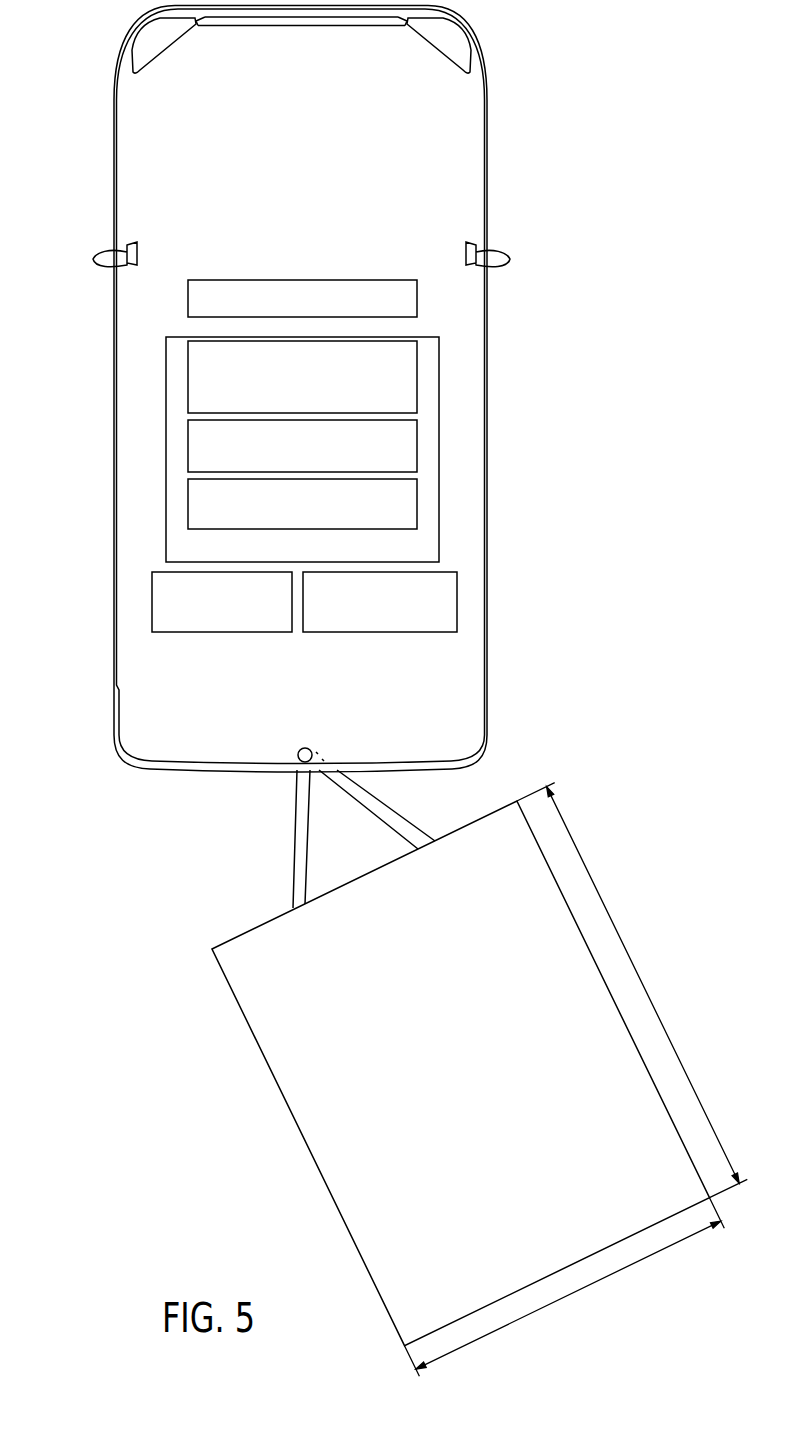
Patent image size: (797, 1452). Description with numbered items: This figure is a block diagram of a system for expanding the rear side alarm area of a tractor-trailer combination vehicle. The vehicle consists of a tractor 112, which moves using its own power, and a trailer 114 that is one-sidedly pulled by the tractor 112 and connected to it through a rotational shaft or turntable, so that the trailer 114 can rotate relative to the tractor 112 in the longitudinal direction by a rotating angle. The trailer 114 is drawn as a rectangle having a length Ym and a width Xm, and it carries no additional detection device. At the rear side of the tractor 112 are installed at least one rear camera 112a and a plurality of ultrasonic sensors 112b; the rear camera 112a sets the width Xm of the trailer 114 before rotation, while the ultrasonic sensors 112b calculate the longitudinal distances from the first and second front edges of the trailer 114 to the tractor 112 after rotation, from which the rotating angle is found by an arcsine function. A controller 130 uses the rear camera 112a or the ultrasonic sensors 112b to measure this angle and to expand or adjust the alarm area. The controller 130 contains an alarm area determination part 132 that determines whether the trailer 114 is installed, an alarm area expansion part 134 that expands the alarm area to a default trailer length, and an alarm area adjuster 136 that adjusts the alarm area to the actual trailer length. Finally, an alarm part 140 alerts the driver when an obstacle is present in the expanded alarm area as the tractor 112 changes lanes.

The tractor 112 is at (113, 460).
The rear camera 112a is at (152, 600).
The ultrasonic sensors 112b is at (457, 600).
The trailer 114 is at (325, 1182).
The controller 130 is at (306, 449).
The alarm area determination part 132 is at (417, 377).
The alarm area expansion part 134 is at (417, 443).
The alarm area adjuster 136 is at (417, 503).
The alarm part 140 is at (417, 298).